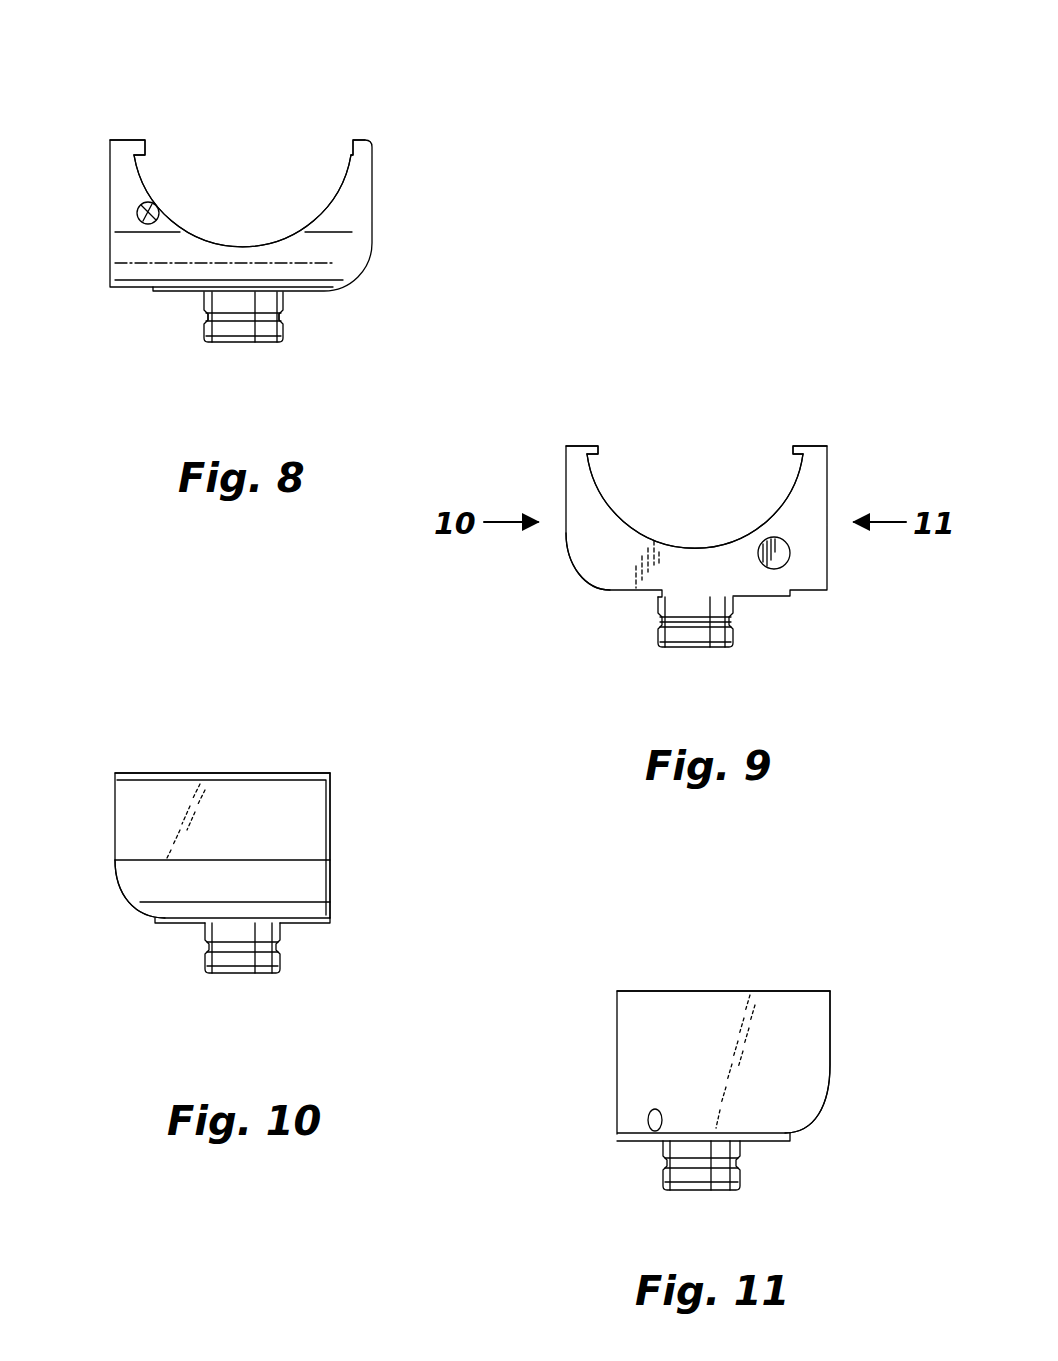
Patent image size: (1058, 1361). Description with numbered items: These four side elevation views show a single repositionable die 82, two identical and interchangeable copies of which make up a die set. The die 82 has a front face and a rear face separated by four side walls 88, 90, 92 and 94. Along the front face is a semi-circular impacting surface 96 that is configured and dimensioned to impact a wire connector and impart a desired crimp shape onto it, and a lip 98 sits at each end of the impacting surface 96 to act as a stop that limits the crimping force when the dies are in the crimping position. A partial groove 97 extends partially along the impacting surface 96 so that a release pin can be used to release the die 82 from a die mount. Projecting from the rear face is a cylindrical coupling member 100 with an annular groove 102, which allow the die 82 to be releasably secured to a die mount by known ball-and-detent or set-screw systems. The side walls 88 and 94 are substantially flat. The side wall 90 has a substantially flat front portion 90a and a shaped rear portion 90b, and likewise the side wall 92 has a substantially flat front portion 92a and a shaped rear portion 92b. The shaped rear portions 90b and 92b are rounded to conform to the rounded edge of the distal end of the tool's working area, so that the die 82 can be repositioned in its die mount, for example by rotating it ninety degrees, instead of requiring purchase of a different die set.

In FIG. 8, the die 82 is at (373, 75).
In FIG. 9, the die 82 is at (786, 374).
In FIG. 10, the die 82 is at (298, 720).
In FIG. 11, the die 82 is at (808, 930).
In FIG. 11, the side wall 88 is at (805, 1058).
In FIG. 10, the side wall 90 is at (308, 830).
In FIG. 10, the front portion 90a is at (122, 818).
In FIG. 10, the shaped rear portion 90b is at (140, 888).
In FIG. 8, the side wall 92 is at (133, 257).
In FIG. 8, the front portion 92a is at (360, 185).
In FIG. 8, the shaped rear portion 92b is at (335, 263).
In FIG. 9, the side wall 94 is at (603, 557).
In FIG. 8, the impacting surface 96 is at (252, 245).
In FIG. 9, the impacting surface 96 is at (690, 548).
In FIG. 8, the partial groove 97 is at (158, 205).
In FIG. 8, the lip 98 is at (133, 140).
In FIG. 9, the lip 98 is at (578, 446).
In FIG. 10, the lip 98 is at (178, 773).
In FIG. 11, the lip 98 is at (668, 991).
In FIG. 8, the coupling member 100 is at (212, 342).
In FIG. 9, the coupling member 100 is at (660, 648).
In FIG. 10, the coupling member 100 is at (215, 973).
In FIG. 11, the coupling member 100 is at (670, 1192).
In FIG. 8, the annular groove 102 is at (285, 312).
In FIG. 9, the annular groove 102 is at (737, 617).